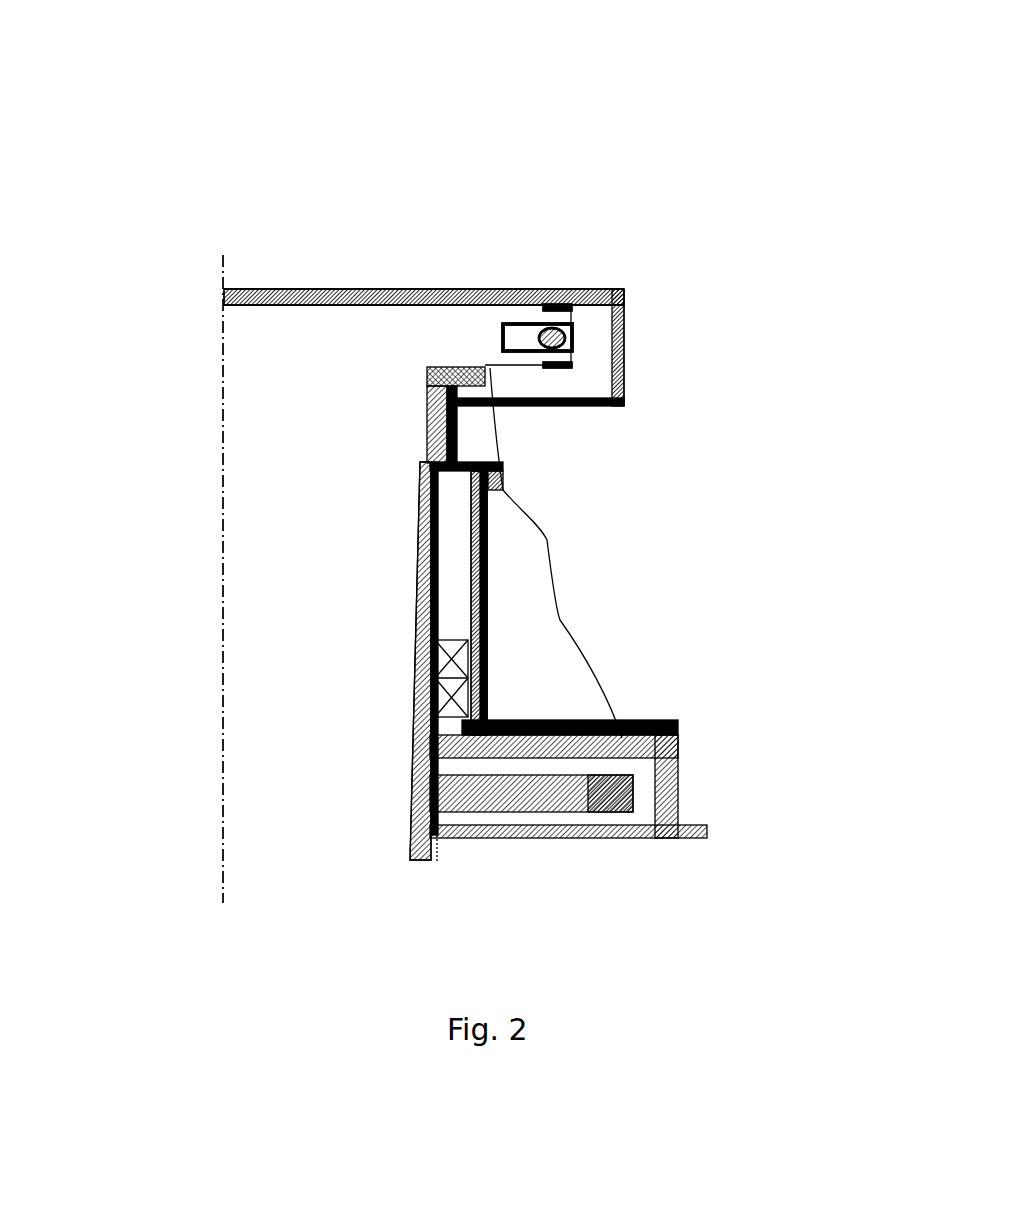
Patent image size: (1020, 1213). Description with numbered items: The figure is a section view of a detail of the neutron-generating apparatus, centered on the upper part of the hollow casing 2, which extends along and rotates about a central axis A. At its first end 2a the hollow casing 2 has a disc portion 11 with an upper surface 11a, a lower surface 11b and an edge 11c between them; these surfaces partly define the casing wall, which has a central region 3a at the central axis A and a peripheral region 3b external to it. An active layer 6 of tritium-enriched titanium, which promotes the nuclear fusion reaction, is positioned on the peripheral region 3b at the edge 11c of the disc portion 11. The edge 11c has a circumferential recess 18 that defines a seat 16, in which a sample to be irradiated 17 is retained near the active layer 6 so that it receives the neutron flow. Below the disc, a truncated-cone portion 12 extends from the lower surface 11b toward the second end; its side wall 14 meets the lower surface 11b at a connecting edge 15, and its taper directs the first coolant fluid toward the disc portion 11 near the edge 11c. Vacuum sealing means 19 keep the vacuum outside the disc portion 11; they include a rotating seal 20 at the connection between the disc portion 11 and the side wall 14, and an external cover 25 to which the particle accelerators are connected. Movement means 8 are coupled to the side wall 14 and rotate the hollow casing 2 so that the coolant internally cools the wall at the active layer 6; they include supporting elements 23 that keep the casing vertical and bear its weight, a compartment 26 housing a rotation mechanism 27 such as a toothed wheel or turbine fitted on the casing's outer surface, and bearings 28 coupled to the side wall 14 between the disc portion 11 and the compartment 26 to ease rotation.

The hollow casing 2 is at (230, 365).
The first end 2a is at (386, 289).
The central region 3a is at (218, 298).
The peripheral region 3b is at (553, 370).
The active layer 6 is at (552, 323).
The movement means 8 is at (427, 448).
The disc portion 11 is at (275, 295).
The upper surface 11a is at (356, 289).
The lower surface 11b is at (490, 610).
The edge 11c is at (573, 309).
The truncated-cone portion 12 is at (400, 655).
The side wall 14 is at (415, 730).
The connecting edge 15 is at (427, 365).
The seat 16 is at (600, 327).
The sample to be irradiated 17 is at (553, 290).
The circumferential recess 18 is at (575, 337).
The vacuum sealing means 19 is at (627, 294).
The rotating seal 20 is at (427, 414).
The supporting elements 23 is at (497, 612).
The external cover 25 is at (463, 289).
The compartment 26 is at (425, 767).
The rotation mechanism 27 is at (500, 616).
The bearings 28 is at (513, 627).
The central axis A is at (225, 820).